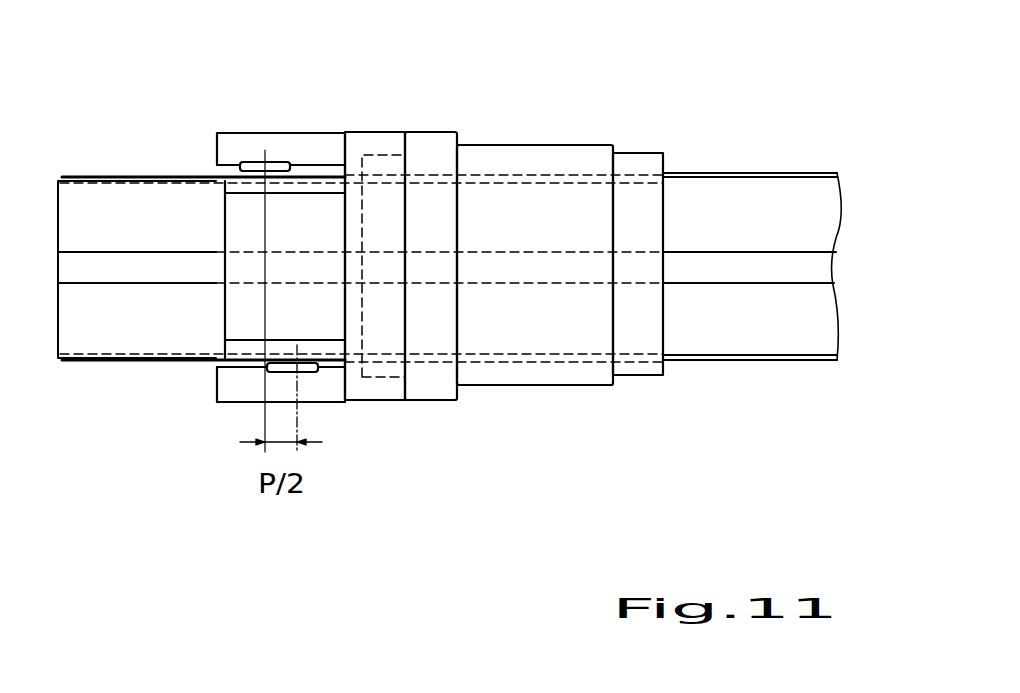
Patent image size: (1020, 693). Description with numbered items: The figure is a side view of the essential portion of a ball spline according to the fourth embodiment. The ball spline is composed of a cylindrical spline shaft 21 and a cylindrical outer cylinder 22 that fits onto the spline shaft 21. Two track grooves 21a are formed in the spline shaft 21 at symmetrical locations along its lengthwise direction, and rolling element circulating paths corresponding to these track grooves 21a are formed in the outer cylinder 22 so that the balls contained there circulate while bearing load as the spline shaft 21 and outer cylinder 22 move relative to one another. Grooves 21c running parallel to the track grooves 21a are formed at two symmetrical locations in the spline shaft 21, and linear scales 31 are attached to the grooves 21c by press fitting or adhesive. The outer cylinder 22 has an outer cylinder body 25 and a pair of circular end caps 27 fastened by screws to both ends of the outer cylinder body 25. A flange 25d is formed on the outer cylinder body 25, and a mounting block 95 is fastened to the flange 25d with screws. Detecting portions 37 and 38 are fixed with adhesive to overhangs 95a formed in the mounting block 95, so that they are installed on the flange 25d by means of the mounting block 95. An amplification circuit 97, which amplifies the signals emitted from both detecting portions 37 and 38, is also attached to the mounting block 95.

The spline shaft 21 is at (758, 242).
The track grooves 21a is at (748, 273).
The grooves 21c is at (65, 178).
The outer cylinder 22 is at (512, 263).
The outer cylinder body 25 is at (498, 378).
The flange 25d is at (437, 137).
The end caps 27 is at (385, 377).
The linear scales 31 is at (132, 176).
The detecting portion 37 is at (280, 170).
The detecting portion 38 is at (313, 370).
The mounting block 95 is at (368, 137).
The overhangs 95a is at (315, 138).
The amplification circuit 97 is at (240, 205).